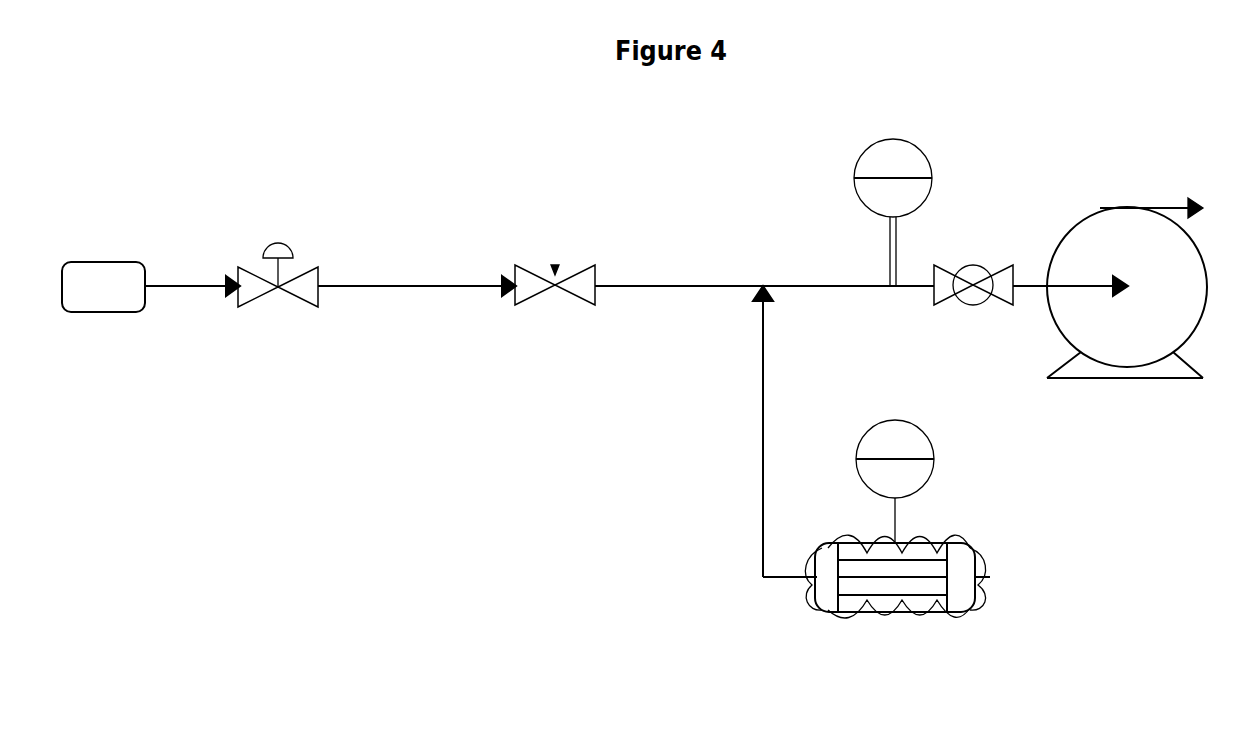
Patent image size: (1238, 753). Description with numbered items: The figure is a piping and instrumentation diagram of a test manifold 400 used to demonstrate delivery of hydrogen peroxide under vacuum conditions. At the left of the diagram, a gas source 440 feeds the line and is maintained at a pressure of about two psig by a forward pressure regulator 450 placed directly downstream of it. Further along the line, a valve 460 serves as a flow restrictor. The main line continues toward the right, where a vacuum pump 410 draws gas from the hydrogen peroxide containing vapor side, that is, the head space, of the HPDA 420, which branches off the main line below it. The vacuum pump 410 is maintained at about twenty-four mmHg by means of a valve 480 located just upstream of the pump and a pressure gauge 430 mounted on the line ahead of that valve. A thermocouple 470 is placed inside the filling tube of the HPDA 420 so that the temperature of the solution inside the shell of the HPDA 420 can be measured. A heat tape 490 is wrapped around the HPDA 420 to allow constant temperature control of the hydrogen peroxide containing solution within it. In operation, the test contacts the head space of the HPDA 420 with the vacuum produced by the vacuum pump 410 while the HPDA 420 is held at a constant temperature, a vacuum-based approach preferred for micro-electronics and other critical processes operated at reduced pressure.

The test manifold 400 is at (512, 180).
The vacuum pump 410 is at (1088, 213).
The HPDA 420 is at (990, 577).
The pressure gauge 430 is at (893, 139).
The gas source 440 is at (130, 262).
The forward pressure regulator 450 is at (279, 246).
The valve 460 is at (537, 300).
The thermocouple 470 is at (932, 472).
The valve 480 is at (975, 296).
The heat tape 490 is at (930, 620).